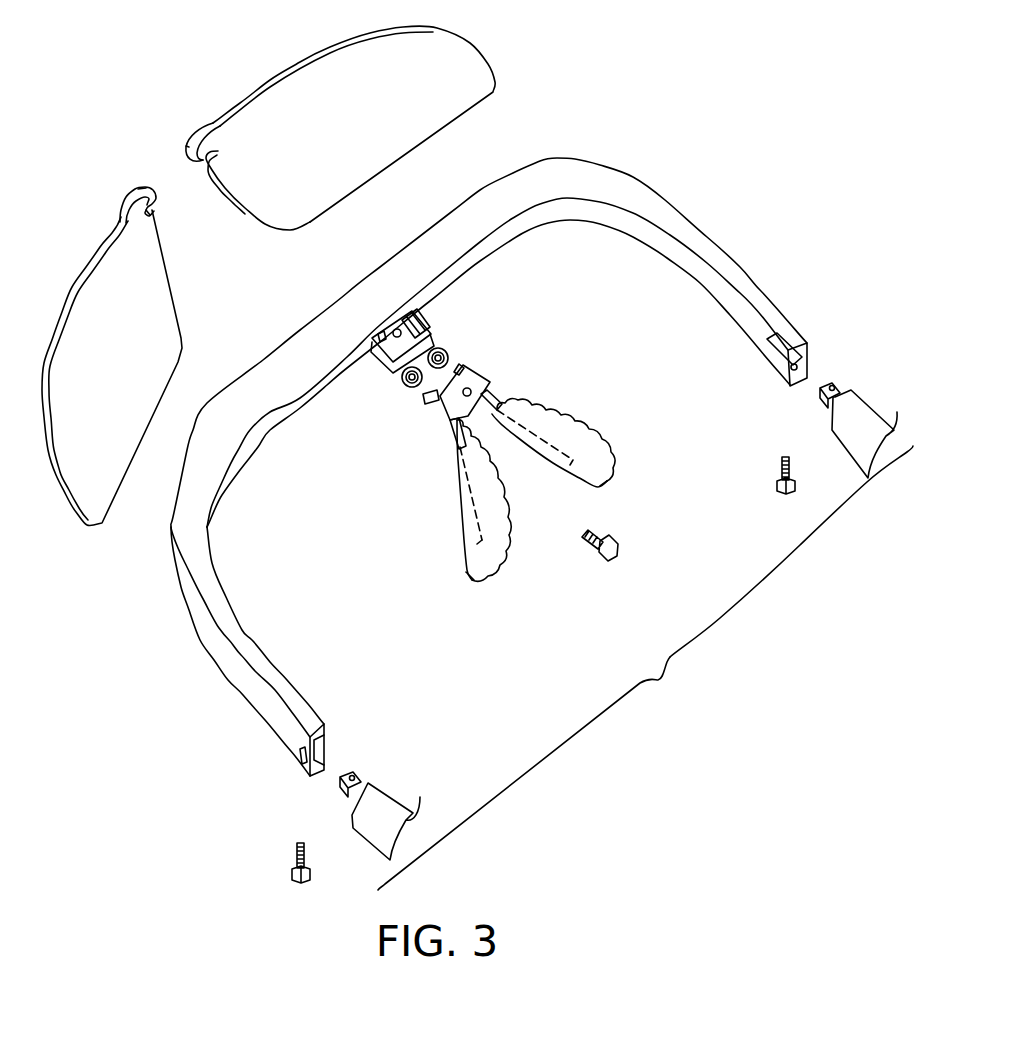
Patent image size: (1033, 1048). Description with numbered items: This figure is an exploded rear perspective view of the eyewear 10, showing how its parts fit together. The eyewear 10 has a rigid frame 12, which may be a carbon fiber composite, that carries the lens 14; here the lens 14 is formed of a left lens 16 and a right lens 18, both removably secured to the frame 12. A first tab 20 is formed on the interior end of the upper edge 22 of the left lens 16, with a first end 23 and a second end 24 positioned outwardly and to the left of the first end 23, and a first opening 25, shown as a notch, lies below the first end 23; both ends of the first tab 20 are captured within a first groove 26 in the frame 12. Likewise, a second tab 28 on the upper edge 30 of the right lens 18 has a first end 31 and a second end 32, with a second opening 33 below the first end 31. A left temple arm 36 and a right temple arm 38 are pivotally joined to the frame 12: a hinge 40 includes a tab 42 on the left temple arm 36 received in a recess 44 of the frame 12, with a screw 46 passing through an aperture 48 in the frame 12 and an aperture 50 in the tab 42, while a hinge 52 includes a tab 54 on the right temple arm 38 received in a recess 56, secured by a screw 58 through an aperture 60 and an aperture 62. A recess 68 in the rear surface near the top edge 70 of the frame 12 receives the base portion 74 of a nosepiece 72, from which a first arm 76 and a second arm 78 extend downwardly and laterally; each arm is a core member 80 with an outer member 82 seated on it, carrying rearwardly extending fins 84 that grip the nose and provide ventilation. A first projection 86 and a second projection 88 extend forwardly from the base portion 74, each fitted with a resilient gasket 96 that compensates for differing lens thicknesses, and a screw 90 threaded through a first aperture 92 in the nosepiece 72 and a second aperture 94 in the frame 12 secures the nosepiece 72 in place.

The eyewear 10 is at (549, 134).
The frame 12 is at (264, 358).
The lens 14 is at (126, 109).
The left lens 16 is at (106, 359).
The right lens 18 is at (322, 134).
The first tab 20 is at (134, 211).
The upper edge 22 is at (71, 286).
The first end 23 is at (141, 191).
The second end 24 is at (120, 223).
The first opening 25 is at (148, 216).
The first groove 26 is at (375, 339).
The second tab 28 is at (197, 135).
The upper edge 30 is at (282, 73).
The first end 31 is at (184, 146).
The second end 32 is at (208, 127).
The second opening 33 is at (222, 153).
The left temple arm 36 is at (400, 802).
The right temple arm 38 is at (866, 411).
The hinge 40 is at (394, 715).
The tab 42 is at (345, 791).
The recess 44 is at (324, 746).
The screw 46 is at (292, 863).
The aperture 48 is at (301, 760).
The aperture 50 is at (356, 776).
The hinge 52 is at (852, 320).
The tab 54 is at (827, 402).
The recess 56 is at (768, 353).
The screw 58 is at (776, 476).
The aperture 60 is at (792, 371).
The aperture 62 is at (832, 385).
The recess 68 is at (390, 372).
The top edge 70 is at (372, 283).
The nosepiece 72 is at (580, 388).
The base portion 74 is at (486, 372).
The first arm 76 is at (454, 551).
The second arm 78 is at (611, 427).
The core member 80 is at (456, 430).
The outer member 82 is at (478, 583).
The fins 84 is at (507, 560).
The first projection 86 is at (428, 402).
The second projection 88 is at (459, 365).
The screw 90 is at (617, 554).
The first aperture 92 is at (472, 391).
The second aperture 94 is at (397, 328).
The gasket 96 is at (439, 348).